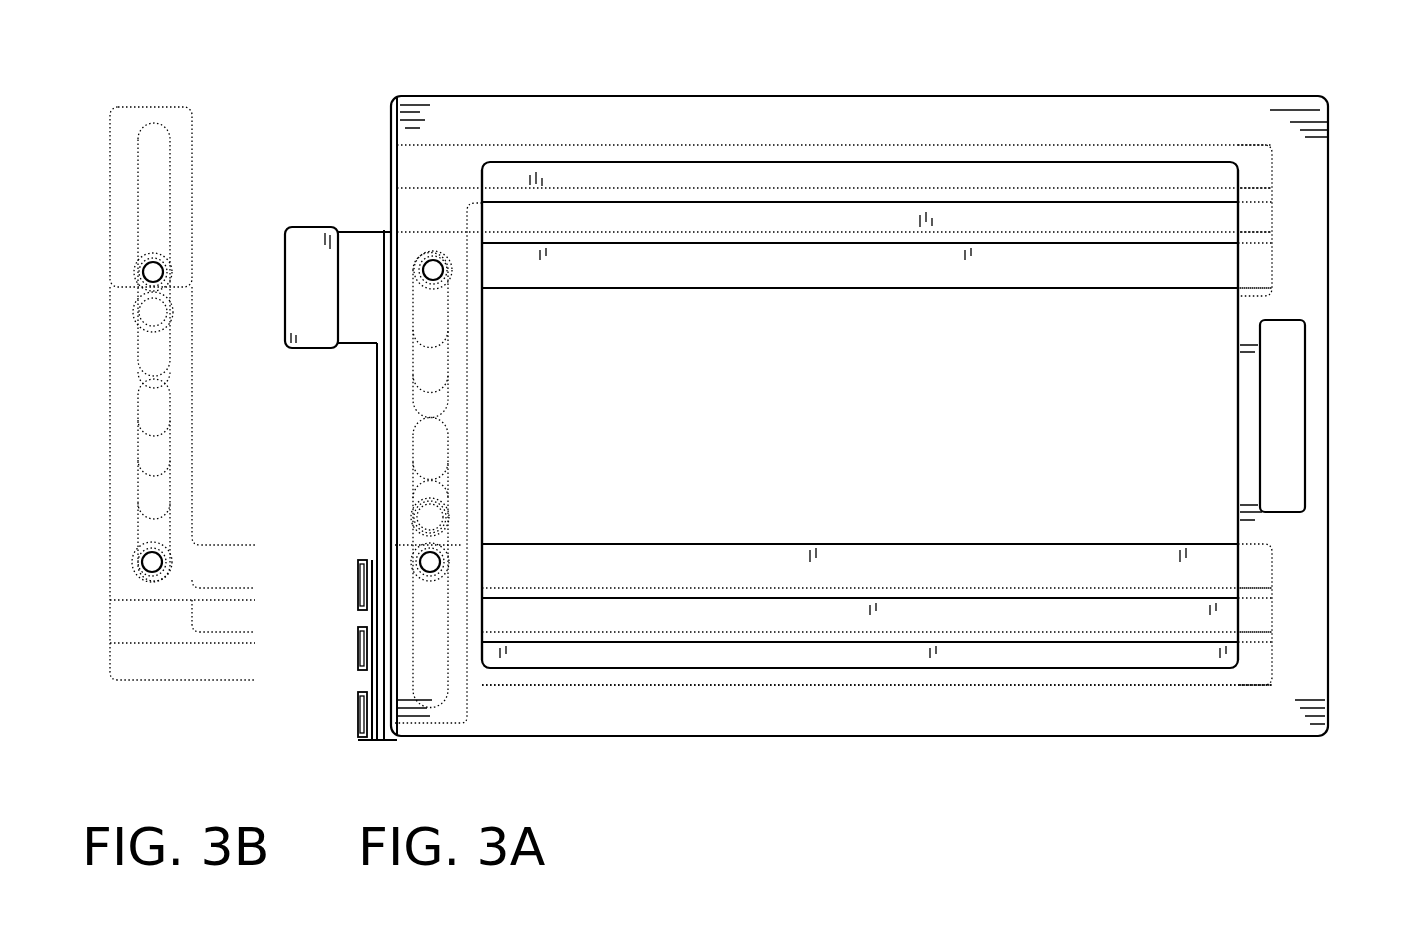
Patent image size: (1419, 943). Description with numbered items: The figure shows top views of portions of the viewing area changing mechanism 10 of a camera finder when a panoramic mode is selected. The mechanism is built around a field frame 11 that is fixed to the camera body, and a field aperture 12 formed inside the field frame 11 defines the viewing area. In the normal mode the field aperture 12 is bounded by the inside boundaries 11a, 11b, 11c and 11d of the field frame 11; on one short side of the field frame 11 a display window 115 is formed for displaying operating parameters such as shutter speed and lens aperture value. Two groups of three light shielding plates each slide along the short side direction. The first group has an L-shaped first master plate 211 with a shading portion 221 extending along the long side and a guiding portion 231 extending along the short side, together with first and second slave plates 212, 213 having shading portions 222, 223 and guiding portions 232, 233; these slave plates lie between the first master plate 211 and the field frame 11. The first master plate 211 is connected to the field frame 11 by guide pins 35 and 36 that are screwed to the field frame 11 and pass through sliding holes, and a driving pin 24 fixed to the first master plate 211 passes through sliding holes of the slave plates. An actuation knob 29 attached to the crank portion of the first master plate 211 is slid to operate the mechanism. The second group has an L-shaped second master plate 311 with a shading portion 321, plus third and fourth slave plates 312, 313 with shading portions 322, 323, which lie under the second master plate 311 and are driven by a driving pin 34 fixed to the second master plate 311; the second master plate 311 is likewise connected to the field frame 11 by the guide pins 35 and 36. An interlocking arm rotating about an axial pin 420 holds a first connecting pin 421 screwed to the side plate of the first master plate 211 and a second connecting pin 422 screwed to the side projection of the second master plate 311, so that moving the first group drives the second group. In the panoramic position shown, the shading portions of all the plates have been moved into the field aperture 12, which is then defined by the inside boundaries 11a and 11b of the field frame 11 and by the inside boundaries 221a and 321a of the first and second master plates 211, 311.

In FIG. 3A, the viewing area changing mechanism 10 is at (1143, 85).
In FIG. 3A, the field frame 11 is at (1068, 110).
In FIG. 3A, the inside boundary 11a is at (482, 422).
In FIG. 3A, the inside boundary 11b is at (1238, 468).
In FIG. 3A, the inside boundary 11c is at (987, 165).
In FIG. 3A, the inside boundary 11d is at (1138, 664).
In FIG. 3A, the field aperture 12 is at (916, 426).
In FIG. 3A, the display window 115 is at (1300, 404).
In FIG. 3A, the driving pin 24 is at (385, 507).
In FIG. 3A, the actuation knob 29 is at (297, 250).
In FIG. 3B, the driving pin 34 is at (157, 318).
In FIG. 3A, the guide pin 35 is at (430, 268).
In FIG. 3B, the guide pin 35 is at (160, 272).
In FIG. 3A, the guide pin 36 is at (428, 562).
In FIG. 3B, the guide pin 36 is at (153, 560).
In FIG. 3A, the first master plate 211 is at (1280, 257).
In FIG. 3A, the first slave plate 212 is at (1285, 215).
In FIG. 3A, the second slave plate 213 is at (1285, 175).
In FIG. 3A, the shading portion 221 is at (857, 255).
In FIG. 3A, the inside boundary 221a is at (700, 290).
In FIG. 3A, the shading portion 222 is at (793, 212).
In FIG. 3A, the shading portion 223 is at (735, 170).
In FIG. 3A, the guiding portion 231 is at (460, 712).
In FIG. 3A, the guiding portion 232 is at (458, 498).
In FIG. 3A, the guiding portion 233 is at (430, 517).
In FIG. 3A, the second master plate 311 is at (1278, 568).
In FIG. 3B, the second master plate 311 is at (185, 190).
In FIG. 3A, the third slave plate 312 is at (1278, 610).
In FIG. 3B, the third slave plate 312 is at (180, 437).
In FIG. 3A, the fourth slave plate 313 is at (1278, 655).
In FIG. 3B, the fourth slave plate 313 is at (182, 483).
In FIG. 3A, the shading portion 321 is at (720, 575).
In FIG. 3A, the inside boundary 321a is at (1020, 513).
In FIG. 3A, the shading portion 322 is at (800, 615).
In FIG. 3A, the shading portion 323 is at (862, 655).
In FIG. 3A, the axial pin 420 is at (328, 648).
In FIG. 3A, the first connecting pin 421 is at (343, 716).
In FIG. 3A, the second connecting pin 422 is at (328, 585).